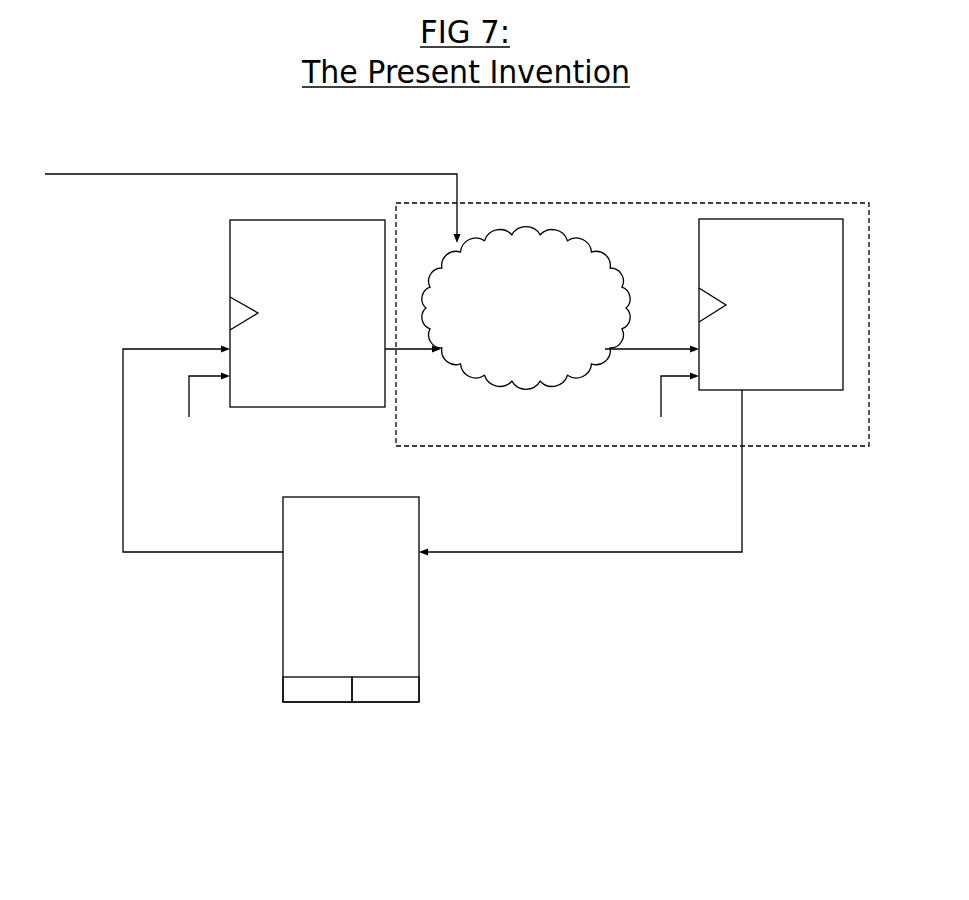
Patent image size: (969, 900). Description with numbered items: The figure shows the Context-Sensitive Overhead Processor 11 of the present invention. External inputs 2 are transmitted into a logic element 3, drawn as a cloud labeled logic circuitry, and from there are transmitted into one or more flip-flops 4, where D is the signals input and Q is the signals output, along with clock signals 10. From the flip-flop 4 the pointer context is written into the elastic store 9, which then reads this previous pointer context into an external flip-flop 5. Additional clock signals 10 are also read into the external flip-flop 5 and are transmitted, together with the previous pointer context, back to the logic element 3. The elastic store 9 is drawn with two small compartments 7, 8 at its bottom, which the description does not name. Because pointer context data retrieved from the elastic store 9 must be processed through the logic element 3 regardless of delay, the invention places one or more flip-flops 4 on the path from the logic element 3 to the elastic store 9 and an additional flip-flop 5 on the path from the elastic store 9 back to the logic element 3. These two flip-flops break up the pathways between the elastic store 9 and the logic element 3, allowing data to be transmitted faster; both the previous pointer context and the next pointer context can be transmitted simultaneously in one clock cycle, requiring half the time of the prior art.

The external inputs 2 is at (253, 194).
The logic element 3 is at (426, 287).
The flip-flop 4 is at (699, 284).
The external flip-flop 5 is at (230, 283).
The elastic store input register 7 is at (315, 702).
The elastic store output register 8 is at (383, 702).
The elastic store 9 is at (419, 587).
The clock signals 10 is at (423, 398).
The Context-Sensitive Overhead Processor 11 is at (829, 446).